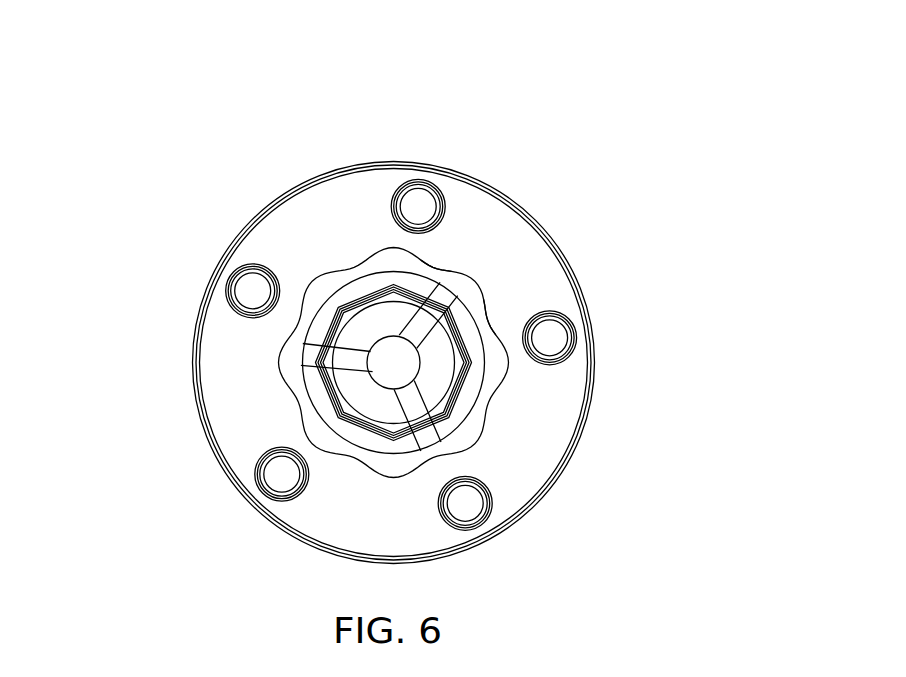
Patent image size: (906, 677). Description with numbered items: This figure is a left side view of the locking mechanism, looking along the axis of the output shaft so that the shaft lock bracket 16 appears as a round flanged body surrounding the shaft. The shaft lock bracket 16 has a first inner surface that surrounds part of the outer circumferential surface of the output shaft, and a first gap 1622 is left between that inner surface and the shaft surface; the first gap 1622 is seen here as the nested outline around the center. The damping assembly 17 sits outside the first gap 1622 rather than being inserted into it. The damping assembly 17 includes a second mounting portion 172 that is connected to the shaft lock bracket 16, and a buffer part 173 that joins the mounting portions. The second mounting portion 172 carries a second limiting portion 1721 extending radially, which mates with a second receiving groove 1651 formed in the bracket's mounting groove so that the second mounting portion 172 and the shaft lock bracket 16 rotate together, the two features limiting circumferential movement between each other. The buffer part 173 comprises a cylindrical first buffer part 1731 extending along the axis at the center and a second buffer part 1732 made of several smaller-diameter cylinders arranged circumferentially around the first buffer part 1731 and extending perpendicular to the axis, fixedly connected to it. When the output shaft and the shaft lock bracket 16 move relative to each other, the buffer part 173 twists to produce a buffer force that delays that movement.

The shaft lock bracket 16 is at (197, 293).
The damping assembly 17 is at (308, 285).
The second mounting portion 172 is at (297, 387).
The second limiting portion 1721 is at (490, 307).
The second receiving groove 1651 is at (437, 257).
The first gap 1622 is at (376, 292).
The buffer part 173 is at (549, 423).
The first buffer part 1731 is at (390, 368).
The second buffer part 1732 is at (420, 327).